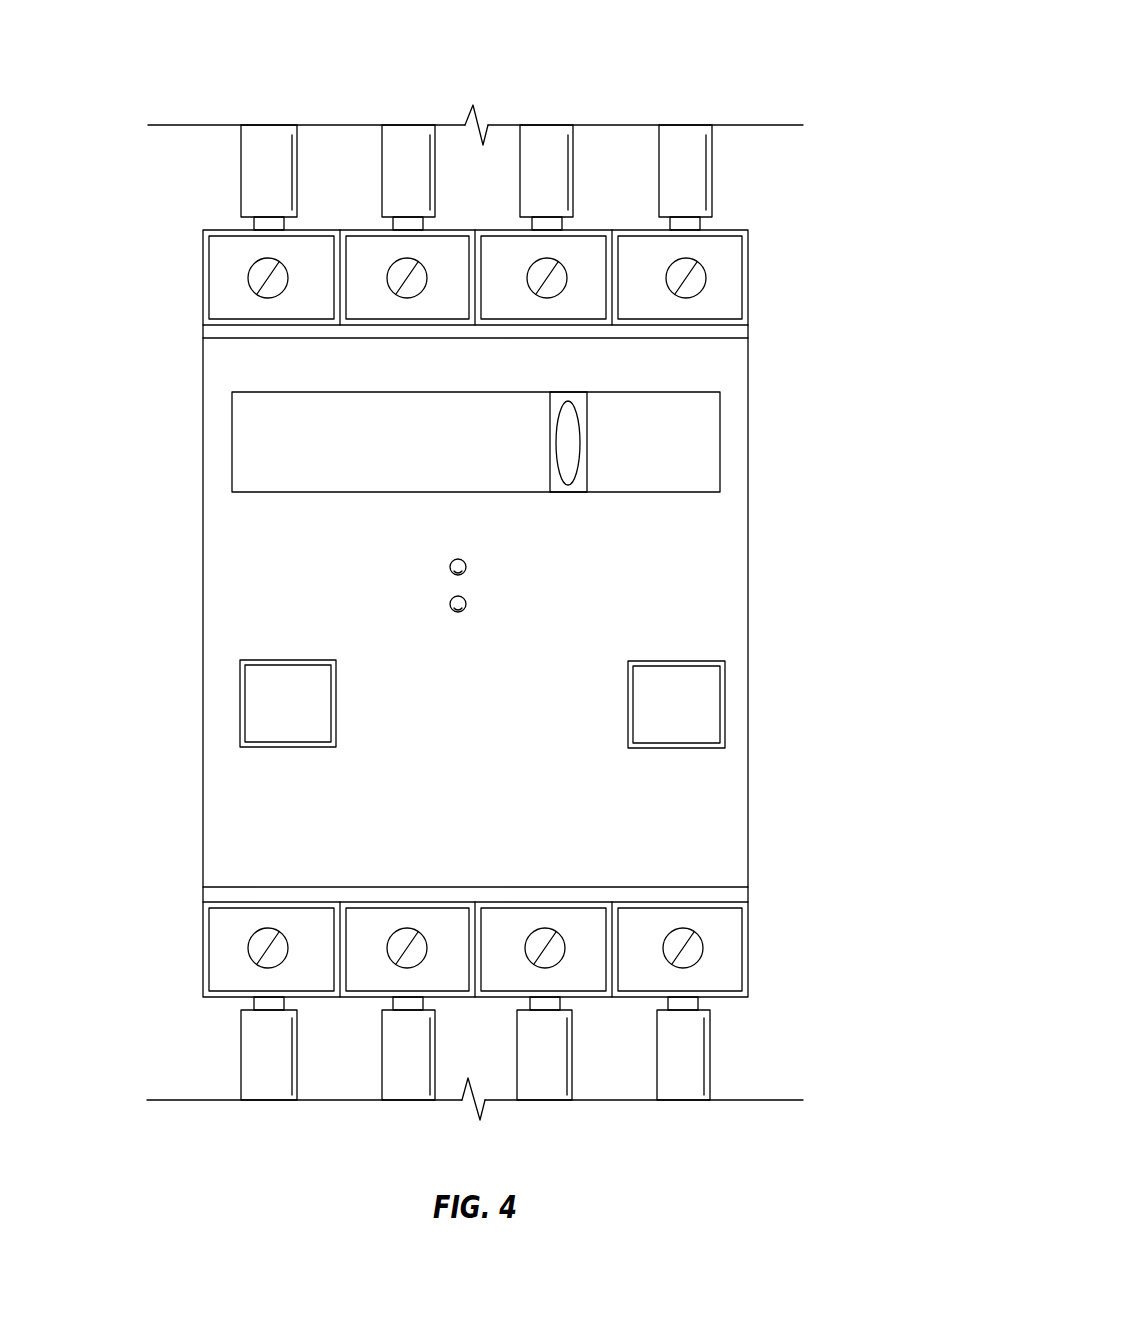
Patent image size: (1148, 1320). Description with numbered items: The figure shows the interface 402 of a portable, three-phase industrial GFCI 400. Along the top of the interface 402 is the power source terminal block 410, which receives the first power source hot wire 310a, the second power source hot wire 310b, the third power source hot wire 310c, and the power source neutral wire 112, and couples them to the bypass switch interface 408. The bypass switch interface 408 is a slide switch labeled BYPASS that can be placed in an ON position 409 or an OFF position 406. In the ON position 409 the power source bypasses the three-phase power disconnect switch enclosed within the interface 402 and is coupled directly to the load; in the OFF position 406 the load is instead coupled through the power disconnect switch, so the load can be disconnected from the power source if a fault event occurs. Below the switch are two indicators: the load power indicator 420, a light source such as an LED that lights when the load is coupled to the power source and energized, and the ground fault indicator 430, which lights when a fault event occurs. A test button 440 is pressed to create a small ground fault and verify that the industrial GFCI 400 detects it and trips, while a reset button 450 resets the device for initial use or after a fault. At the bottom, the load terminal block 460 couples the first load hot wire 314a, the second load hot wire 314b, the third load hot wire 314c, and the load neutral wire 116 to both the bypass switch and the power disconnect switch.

The industrial GFCI 400 is at (800, 62).
The interface 402 is at (748, 365).
The OFF position 406 is at (222, 512).
The bypass switch interface 408 is at (568, 392).
The ON position 409 is at (725, 515).
The power source terminal block 410 is at (203, 297).
The load power indicator 420 is at (467, 564).
The ground fault indicator 430 is at (468, 607).
The test button 440 is at (336, 706).
The reset button 450 is at (628, 707).
The load terminal block 460 is at (748, 945).
The first power source hot wire 310a is at (241, 183).
The second power source hot wire 310b is at (382, 207).
The third power source hot wire 310c is at (573, 207).
The power source neutral wire 112 is at (712, 183).
The first load hot wire 314a is at (241, 1058).
The second load hot wire 314b is at (382, 1080).
The third load hot wire 314c is at (572, 1080).
The load neutral wire 116 is at (710, 1058).